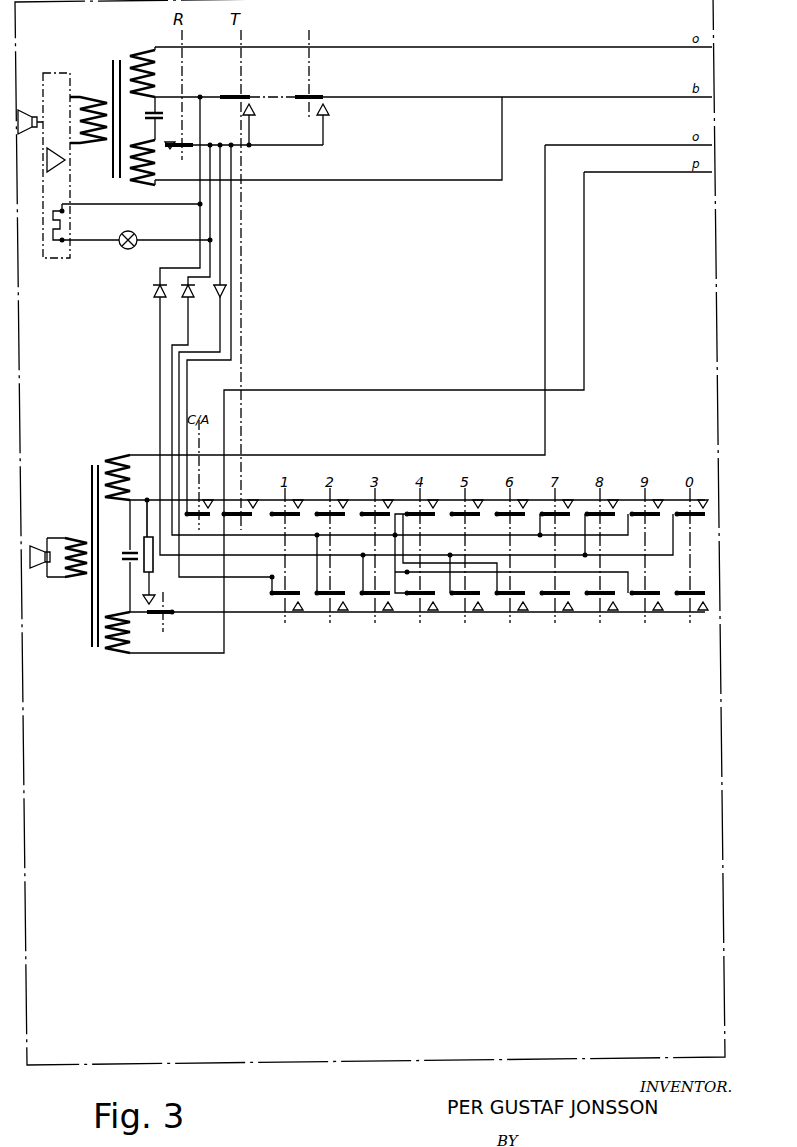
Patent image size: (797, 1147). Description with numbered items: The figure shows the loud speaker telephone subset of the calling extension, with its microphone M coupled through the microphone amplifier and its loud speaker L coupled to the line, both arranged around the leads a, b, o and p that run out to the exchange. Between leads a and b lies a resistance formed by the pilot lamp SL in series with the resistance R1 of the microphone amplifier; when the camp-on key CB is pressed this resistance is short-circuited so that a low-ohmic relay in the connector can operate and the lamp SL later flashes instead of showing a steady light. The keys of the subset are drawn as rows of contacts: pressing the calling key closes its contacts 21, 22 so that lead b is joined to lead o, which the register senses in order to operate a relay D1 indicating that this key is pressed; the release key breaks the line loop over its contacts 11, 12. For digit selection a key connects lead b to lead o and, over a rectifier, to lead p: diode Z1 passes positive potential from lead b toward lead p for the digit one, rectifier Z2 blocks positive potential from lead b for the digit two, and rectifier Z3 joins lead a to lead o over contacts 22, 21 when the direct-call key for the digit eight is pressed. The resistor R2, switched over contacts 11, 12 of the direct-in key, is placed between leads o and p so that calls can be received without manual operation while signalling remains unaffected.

The key contact 11 is at (390, 337).
The key contact 12 is at (384, 366).
The key contact 21 is at (420, 508).
The key contact 22 is at (407, 500).
The resistance of the microphone amplifier R1 is at (55, 218).
The resistor R2 is at (141, 536).
The relay D1 is at (158, 588).
The pilot lamp SL is at (128, 234).
The camp-on busy key CB is at (309, 53).
The diode Z1 is at (212, 293).
The rectifier Z2 is at (180, 293).
The rectifier Z3 is at (150, 293).
The microphone M is at (30, 131).
The loud speaker L is at (58, 547).